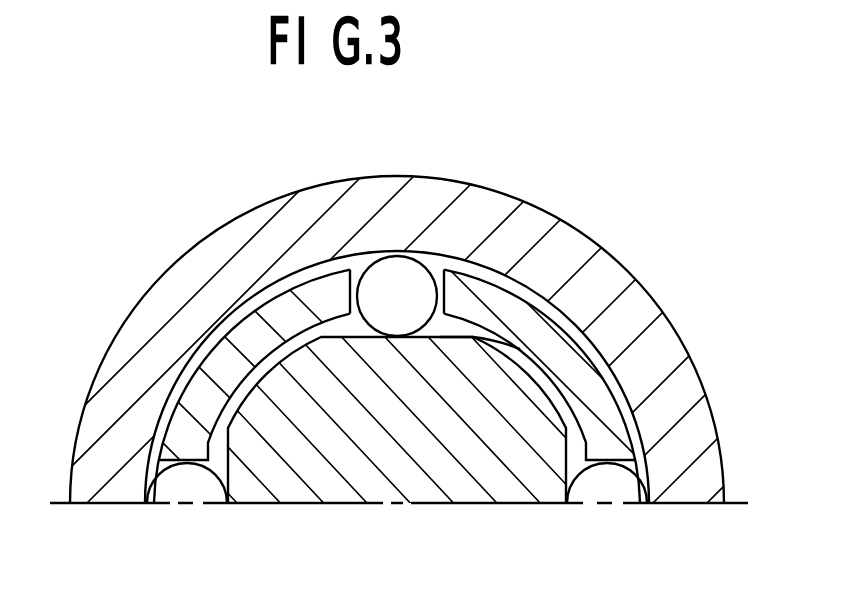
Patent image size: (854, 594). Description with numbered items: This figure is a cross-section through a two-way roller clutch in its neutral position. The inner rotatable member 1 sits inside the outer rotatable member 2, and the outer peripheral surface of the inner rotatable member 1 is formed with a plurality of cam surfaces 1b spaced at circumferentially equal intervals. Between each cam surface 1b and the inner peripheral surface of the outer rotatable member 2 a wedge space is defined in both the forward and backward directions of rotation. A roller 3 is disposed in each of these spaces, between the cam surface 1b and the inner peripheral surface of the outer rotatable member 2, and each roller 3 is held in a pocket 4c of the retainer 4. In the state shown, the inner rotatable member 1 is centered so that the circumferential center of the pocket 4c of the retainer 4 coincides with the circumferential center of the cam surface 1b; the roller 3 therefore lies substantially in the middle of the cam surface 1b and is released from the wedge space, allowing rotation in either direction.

The inner rotatable member 1 is at (253, 413).
The cam surface 1b is at (453, 337).
The outer rotatable member 2 is at (258, 237).
The roller 3 is at (377, 273).
The retainer 4 is at (240, 340).
The pocket 4c is at (440, 268).